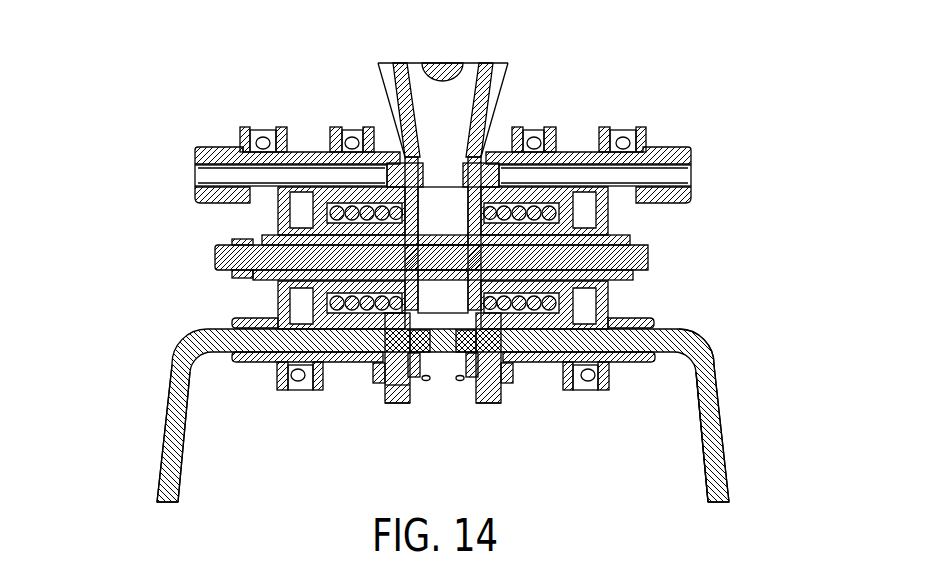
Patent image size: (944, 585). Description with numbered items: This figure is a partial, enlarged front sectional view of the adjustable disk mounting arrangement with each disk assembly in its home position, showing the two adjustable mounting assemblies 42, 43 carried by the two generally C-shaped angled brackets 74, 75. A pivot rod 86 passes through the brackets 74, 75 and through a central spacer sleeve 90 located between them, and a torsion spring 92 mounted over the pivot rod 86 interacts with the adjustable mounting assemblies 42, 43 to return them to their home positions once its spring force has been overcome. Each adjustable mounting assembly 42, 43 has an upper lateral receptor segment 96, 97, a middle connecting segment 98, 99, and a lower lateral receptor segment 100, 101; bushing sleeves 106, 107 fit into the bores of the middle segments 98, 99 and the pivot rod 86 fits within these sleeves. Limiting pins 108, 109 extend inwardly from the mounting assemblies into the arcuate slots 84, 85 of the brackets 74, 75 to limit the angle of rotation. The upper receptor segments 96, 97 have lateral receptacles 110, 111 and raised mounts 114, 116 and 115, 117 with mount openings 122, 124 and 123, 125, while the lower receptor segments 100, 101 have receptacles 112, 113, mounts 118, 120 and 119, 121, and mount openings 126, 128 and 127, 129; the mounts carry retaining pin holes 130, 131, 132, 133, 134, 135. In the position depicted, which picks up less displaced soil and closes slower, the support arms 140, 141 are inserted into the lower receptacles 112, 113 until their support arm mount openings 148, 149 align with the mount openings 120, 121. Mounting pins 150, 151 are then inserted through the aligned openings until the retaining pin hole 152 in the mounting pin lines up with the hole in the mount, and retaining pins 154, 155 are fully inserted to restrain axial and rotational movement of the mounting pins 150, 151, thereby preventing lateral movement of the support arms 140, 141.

The adjustable mounting assembly 42 is at (192, 208).
The adjustable mounting assembly 43 is at (696, 210).
The angled bracket 74 is at (398, 63).
The angled bracket 75 is at (484, 63).
The arcuate slot 84 is at (408, 158).
The arcuate slot 85 is at (473, 158).
The pivot rod 86 is at (645, 268).
The central spacer sleeve 90 is at (448, 235).
The torsion spring 92 is at (383, 313).
The upper lateral receptor segment 96 is at (212, 147).
The upper lateral receptor segment 97 is at (680, 148).
The middle connecting segment 98 is at (277, 304).
The middle connecting segment 99 is at (608, 298).
The lower lateral receptor segment 100 is at (240, 356).
The lower lateral receptor segment 101 is at (645, 358).
The bushing sleeve 106 is at (217, 248).
The bushing sleeve 107 is at (612, 242).
The limiting pin 108 is at (427, 183).
The limiting pin 109 is at (464, 150).
The receptacle 110 is at (205, 174).
The receptacle 111 is at (685, 176).
The receptacle 112 is at (232, 328).
The receptacle 113 is at (658, 327).
The raised mount 114 is at (241, 128).
The raised mount 115 is at (640, 128).
The raised mount 116 is at (331, 148).
The raised mount 117 is at (557, 147).
The raised mount 118 is at (280, 382).
The raised mount 119 is at (698, 395).
The mount opening 120 is at (382, 388).
The mount opening 121 is at (578, 390).
The mount opening 122 is at (268, 128).
The mount opening 123 is at (640, 132).
The mount opening 124 is at (360, 130).
The mount opening 125 is at (535, 140).
The mount opening 126 is at (303, 375).
The mount opening 127 is at (608, 370).
The mount opening 128 is at (417, 402).
The mount opening 129 is at (473, 402).
The retaining pin hole 130 is at (243, 152).
The retaining pin hole 131 is at (630, 148).
The retaining pin hole 132 is at (352, 145).
The retaining pin hole 133 is at (558, 130).
The retaining pin hole 134 is at (291, 380).
The retaining pin hole 135 is at (597, 378).
The support arm 140 is at (157, 455).
The support arm 141 is at (724, 438).
The support arm mount opening 148 is at (463, 372).
The support arm mount opening 149 is at (437, 313).
The mounting pin 150 is at (395, 398).
The mounting pin 151 is at (492, 402).
The retaining pin hole 152 is at (392, 395).
The retaining pin 154 is at (397, 370).
The retaining pin 155 is at (500, 377).